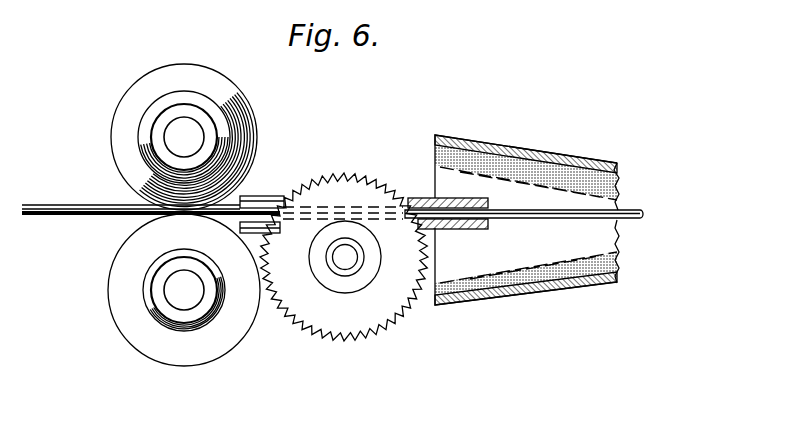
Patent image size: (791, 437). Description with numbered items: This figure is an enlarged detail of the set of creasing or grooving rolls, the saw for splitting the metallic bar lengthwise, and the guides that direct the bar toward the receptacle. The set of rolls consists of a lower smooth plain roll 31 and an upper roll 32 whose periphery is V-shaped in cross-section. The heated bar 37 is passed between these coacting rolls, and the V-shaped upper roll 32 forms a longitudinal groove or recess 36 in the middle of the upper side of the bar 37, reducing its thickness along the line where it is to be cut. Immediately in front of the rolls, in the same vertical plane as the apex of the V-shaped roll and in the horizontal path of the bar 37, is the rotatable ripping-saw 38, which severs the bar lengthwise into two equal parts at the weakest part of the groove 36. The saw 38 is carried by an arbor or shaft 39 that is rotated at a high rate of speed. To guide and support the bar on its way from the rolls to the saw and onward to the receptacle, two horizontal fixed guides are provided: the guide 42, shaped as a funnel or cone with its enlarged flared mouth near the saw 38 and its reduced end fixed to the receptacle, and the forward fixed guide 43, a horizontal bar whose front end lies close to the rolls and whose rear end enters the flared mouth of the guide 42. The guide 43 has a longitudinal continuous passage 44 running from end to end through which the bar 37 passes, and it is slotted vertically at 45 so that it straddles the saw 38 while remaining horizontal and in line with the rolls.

The lower smooth plain roll 31 is at (231, 342).
The upper roll 32 is at (230, 94).
The longitudinal groove or recess 36 is at (246, 209).
The bar 37 is at (118, 216).
The ripping-saw 38 is at (344, 257).
The arbor or shaft 39 is at (347, 260).
The guide 42 is at (530, 148).
The fixed guide 43 is at (268, 197).
The longitudinal continuous passage 44 is at (488, 211).
The vertical slot 45 is at (405, 198).